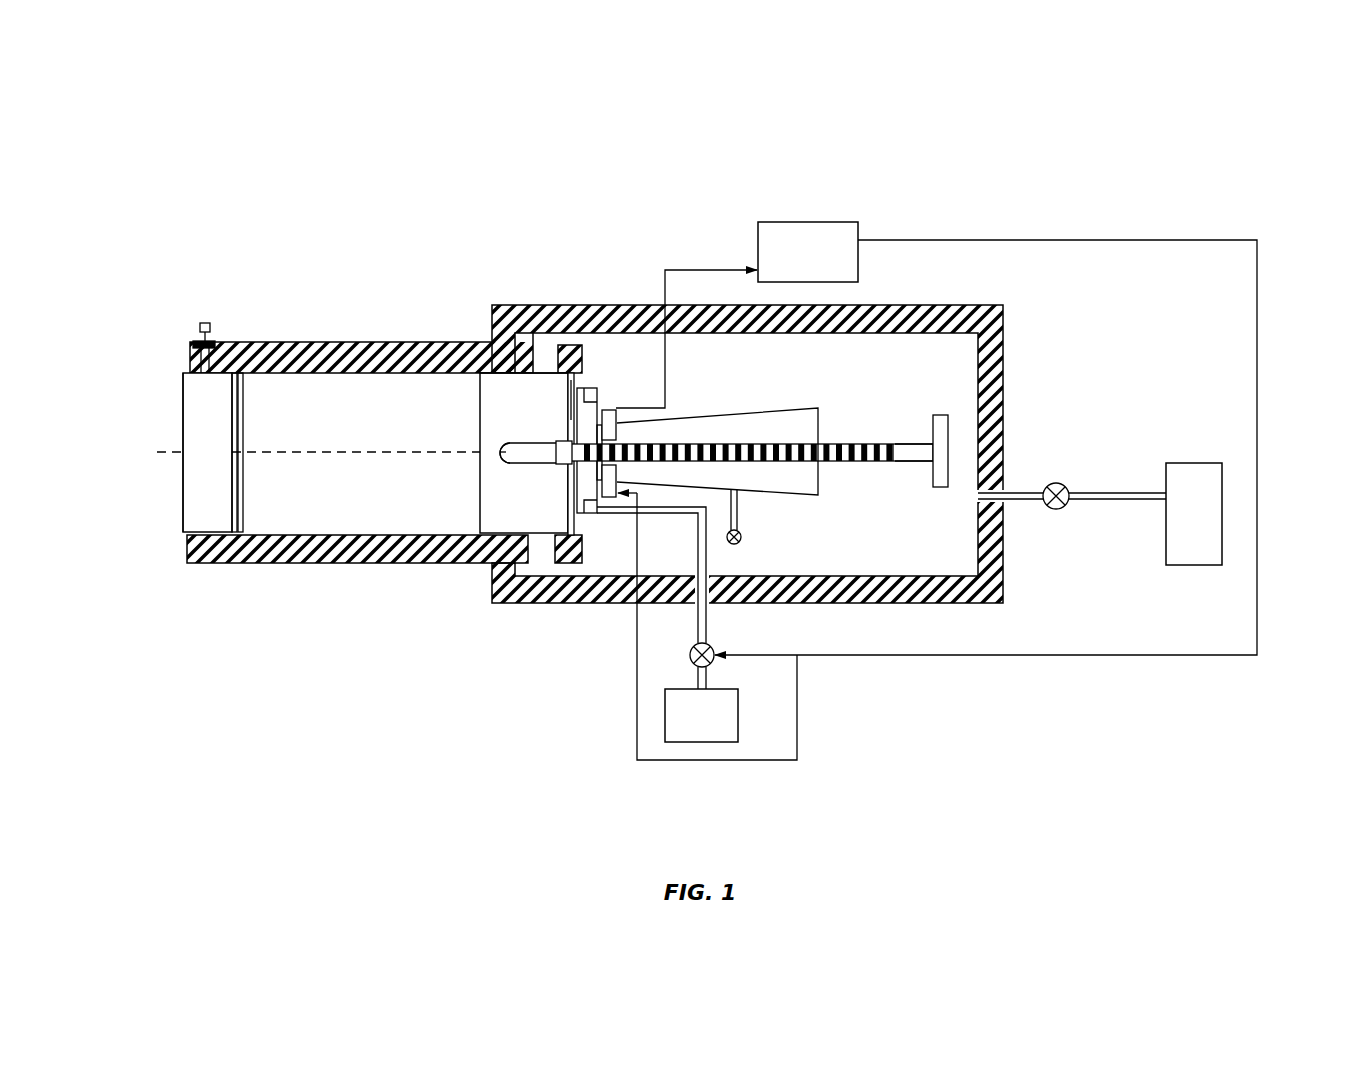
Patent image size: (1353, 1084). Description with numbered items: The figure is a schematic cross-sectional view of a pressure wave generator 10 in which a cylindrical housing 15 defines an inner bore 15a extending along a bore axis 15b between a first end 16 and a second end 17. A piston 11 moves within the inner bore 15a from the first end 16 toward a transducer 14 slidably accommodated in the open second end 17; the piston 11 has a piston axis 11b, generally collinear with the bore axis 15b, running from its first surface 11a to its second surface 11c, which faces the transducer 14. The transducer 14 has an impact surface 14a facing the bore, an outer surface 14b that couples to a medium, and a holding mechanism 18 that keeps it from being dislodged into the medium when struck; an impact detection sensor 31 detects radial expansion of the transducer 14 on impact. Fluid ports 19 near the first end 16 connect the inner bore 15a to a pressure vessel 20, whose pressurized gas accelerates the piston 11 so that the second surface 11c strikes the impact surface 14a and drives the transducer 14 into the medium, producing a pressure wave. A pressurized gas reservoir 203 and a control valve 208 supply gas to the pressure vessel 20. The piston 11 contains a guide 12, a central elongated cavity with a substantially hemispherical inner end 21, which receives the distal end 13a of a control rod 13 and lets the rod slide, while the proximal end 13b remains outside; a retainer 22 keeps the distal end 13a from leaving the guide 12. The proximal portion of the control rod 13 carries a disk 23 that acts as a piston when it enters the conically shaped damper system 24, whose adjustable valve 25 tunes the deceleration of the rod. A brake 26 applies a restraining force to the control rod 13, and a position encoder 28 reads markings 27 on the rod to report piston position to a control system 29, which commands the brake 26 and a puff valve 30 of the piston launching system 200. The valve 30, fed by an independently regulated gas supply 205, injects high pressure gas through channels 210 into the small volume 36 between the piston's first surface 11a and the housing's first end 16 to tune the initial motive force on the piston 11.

The pressure wave generator 10 is at (1052, 192).
The piston 11 is at (478, 507).
The first surface 11a is at (566, 502).
The piston axis 11b is at (488, 447).
The second surface 11c is at (478, 425).
The guide 12 is at (532, 441).
The control rod 13 is at (822, 463).
The distal end 13a is at (568, 440).
The proximal end 13b is at (920, 440).
The transducer 14 is at (212, 473).
The impact surface 14a is at (246, 497).
The outer surface 14b is at (183, 414).
The cylindrical housing 15 is at (437, 343).
The inner bore 15a is at (289, 412).
The bore axis 15b is at (326, 452).
The first end 16 is at (578, 388).
The second end 17 is at (185, 556).
The holding mechanism 18 is at (236, 520).
The fluid ports 19 is at (542, 549).
The pressure vessel 20 is at (908, 303).
The inner end 21 is at (498, 452).
The retainer 22 is at (553, 457).
The disk 23 is at (940, 490).
The damper system 24 is at (778, 432).
The adjustable valve 25 is at (743, 538).
The brake 26 is at (613, 499).
The markings 27 is at (893, 447).
The position encoder 28 is at (614, 410).
The control system 29 is at (845, 232).
The valve 30 is at (714, 662).
The impact detection sensor 31 is at (197, 320).
The volume 36 is at (571, 416).
The piston launching system 200 is at (618, 766).
The pressurized gas reservoir 203 is at (1197, 500).
The gas supply 205 is at (686, 746).
The control valve 208 is at (1058, 485).
The channels 210 is at (581, 536).